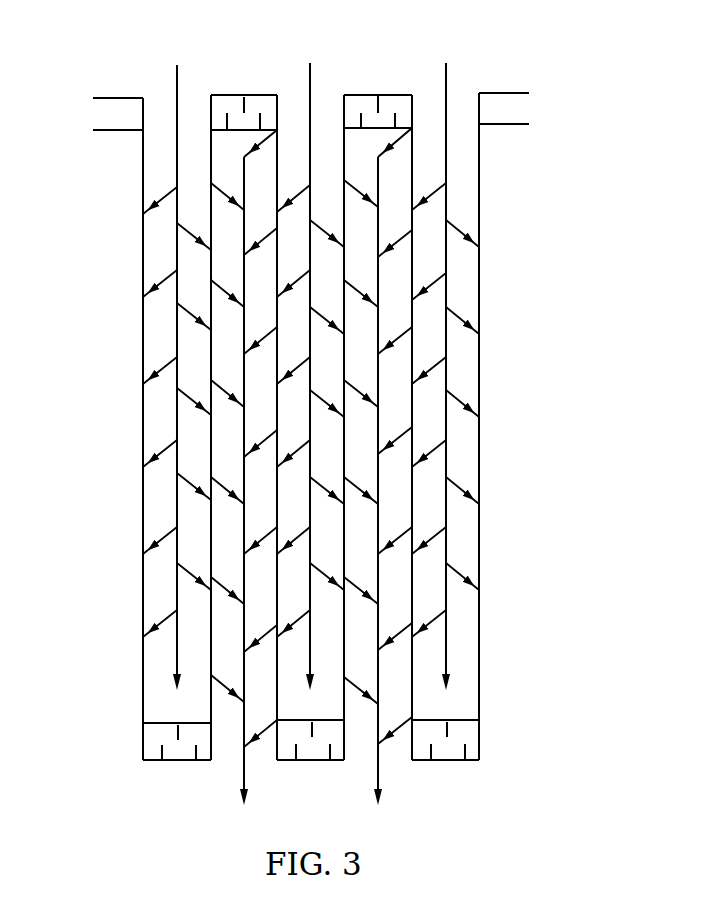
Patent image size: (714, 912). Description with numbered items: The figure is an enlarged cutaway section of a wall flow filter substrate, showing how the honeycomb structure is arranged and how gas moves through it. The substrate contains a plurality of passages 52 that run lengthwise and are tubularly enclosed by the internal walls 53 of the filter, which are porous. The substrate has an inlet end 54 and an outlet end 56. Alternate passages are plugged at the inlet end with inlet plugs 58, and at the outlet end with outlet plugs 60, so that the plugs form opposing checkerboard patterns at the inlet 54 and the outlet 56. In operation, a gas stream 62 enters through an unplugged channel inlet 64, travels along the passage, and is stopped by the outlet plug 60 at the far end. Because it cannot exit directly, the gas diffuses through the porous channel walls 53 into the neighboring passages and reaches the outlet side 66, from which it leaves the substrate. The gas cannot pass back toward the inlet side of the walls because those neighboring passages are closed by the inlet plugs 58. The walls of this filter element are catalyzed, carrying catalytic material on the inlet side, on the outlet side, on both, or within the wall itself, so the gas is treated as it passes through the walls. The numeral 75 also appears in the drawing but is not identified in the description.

The passages 52 is at (186, 127).
The internal walls 53 is at (343, 388).
The inlet end 54 is at (524, 72).
The outlet end 56 is at (482, 770).
The inlet plugs 58 is at (104, 97).
The outlet plugs 60 is at (178, 760).
The gas stream 62 is at (312, 63).
The channel inlet 64 is at (329, 450).
The outlet side 66 is at (311, 741).
The outer wall 75 is at (147, 412).